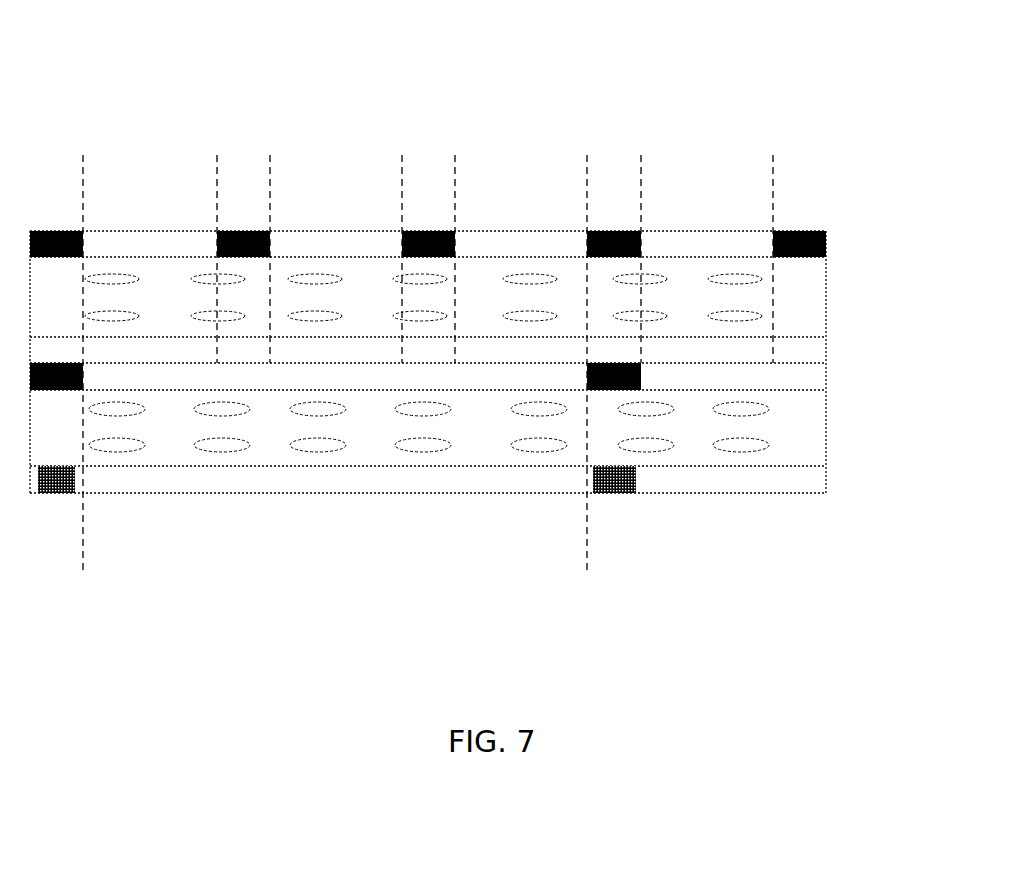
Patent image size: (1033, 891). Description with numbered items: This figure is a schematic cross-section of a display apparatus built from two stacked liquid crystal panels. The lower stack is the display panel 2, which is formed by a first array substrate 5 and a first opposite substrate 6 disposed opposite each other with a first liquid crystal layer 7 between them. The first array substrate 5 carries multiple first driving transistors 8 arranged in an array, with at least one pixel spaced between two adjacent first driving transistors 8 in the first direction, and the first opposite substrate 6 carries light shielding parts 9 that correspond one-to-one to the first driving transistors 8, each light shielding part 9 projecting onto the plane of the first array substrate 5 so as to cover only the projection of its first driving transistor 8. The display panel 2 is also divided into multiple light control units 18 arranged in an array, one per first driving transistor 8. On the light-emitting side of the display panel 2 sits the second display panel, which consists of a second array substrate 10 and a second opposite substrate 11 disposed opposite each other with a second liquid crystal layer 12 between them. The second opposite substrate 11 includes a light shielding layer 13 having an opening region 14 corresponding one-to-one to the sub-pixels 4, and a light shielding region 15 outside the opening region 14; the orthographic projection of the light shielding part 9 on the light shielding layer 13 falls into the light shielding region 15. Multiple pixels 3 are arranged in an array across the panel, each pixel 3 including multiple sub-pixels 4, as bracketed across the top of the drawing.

The display panel 2 is at (870, 488).
The pixel 3 is at (455, 85).
The sub-pixel 4 is at (163, 195).
The first array substrate 5 is at (826, 480).
The first opposite substrate 6 is at (826, 376).
The first liquid crystal layer 7 is at (799, 443).
The first driving transistor 8 is at (612, 493).
The light shielding part 9 is at (612, 363).
The second array substrate 10 is at (826, 350).
The second opposite substrate 11 is at (826, 247).
The second liquid crystal layer 12 is at (880, 238).
The light shielding layer 13 is at (428, 207).
The opening region 14 is at (719, 248).
The light shielding region 15 is at (615, 247).
The light control unit 18 is at (453, 542).